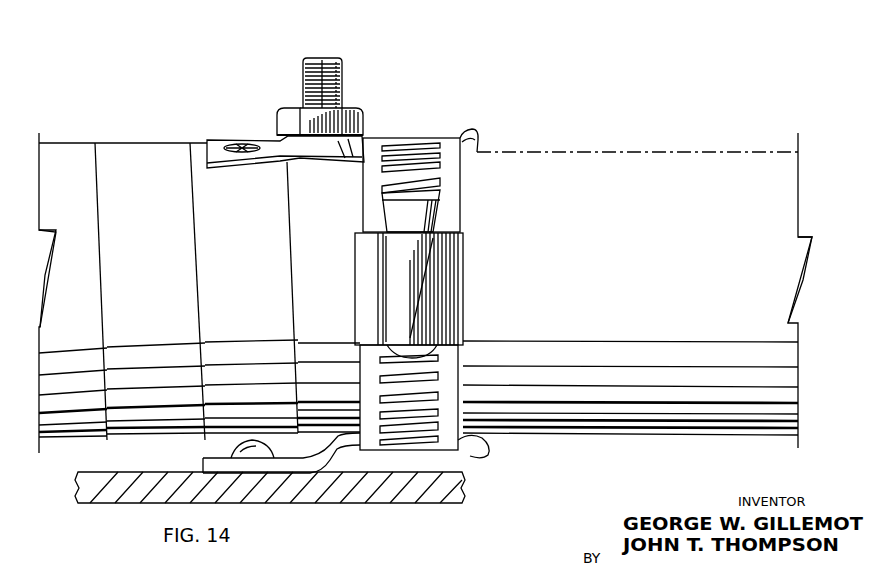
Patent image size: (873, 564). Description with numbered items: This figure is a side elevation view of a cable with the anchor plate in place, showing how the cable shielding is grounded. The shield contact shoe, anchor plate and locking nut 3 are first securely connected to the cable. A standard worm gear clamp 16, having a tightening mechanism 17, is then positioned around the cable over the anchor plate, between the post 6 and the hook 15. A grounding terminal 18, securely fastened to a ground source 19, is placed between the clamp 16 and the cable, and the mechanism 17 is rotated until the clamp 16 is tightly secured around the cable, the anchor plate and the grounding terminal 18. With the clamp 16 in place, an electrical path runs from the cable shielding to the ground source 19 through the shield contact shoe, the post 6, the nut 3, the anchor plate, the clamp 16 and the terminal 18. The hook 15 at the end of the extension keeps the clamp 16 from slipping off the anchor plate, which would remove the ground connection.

The locking nut 3 is at (350, 110).
The post 6 is at (322, 63).
The hook 15 is at (476, 146).
The worm gear clamp 16 is at (450, 183).
The tightening mechanism 17 is at (448, 277).
The grounding terminal 18 is at (485, 449).
The ground source 19 is at (395, 490).